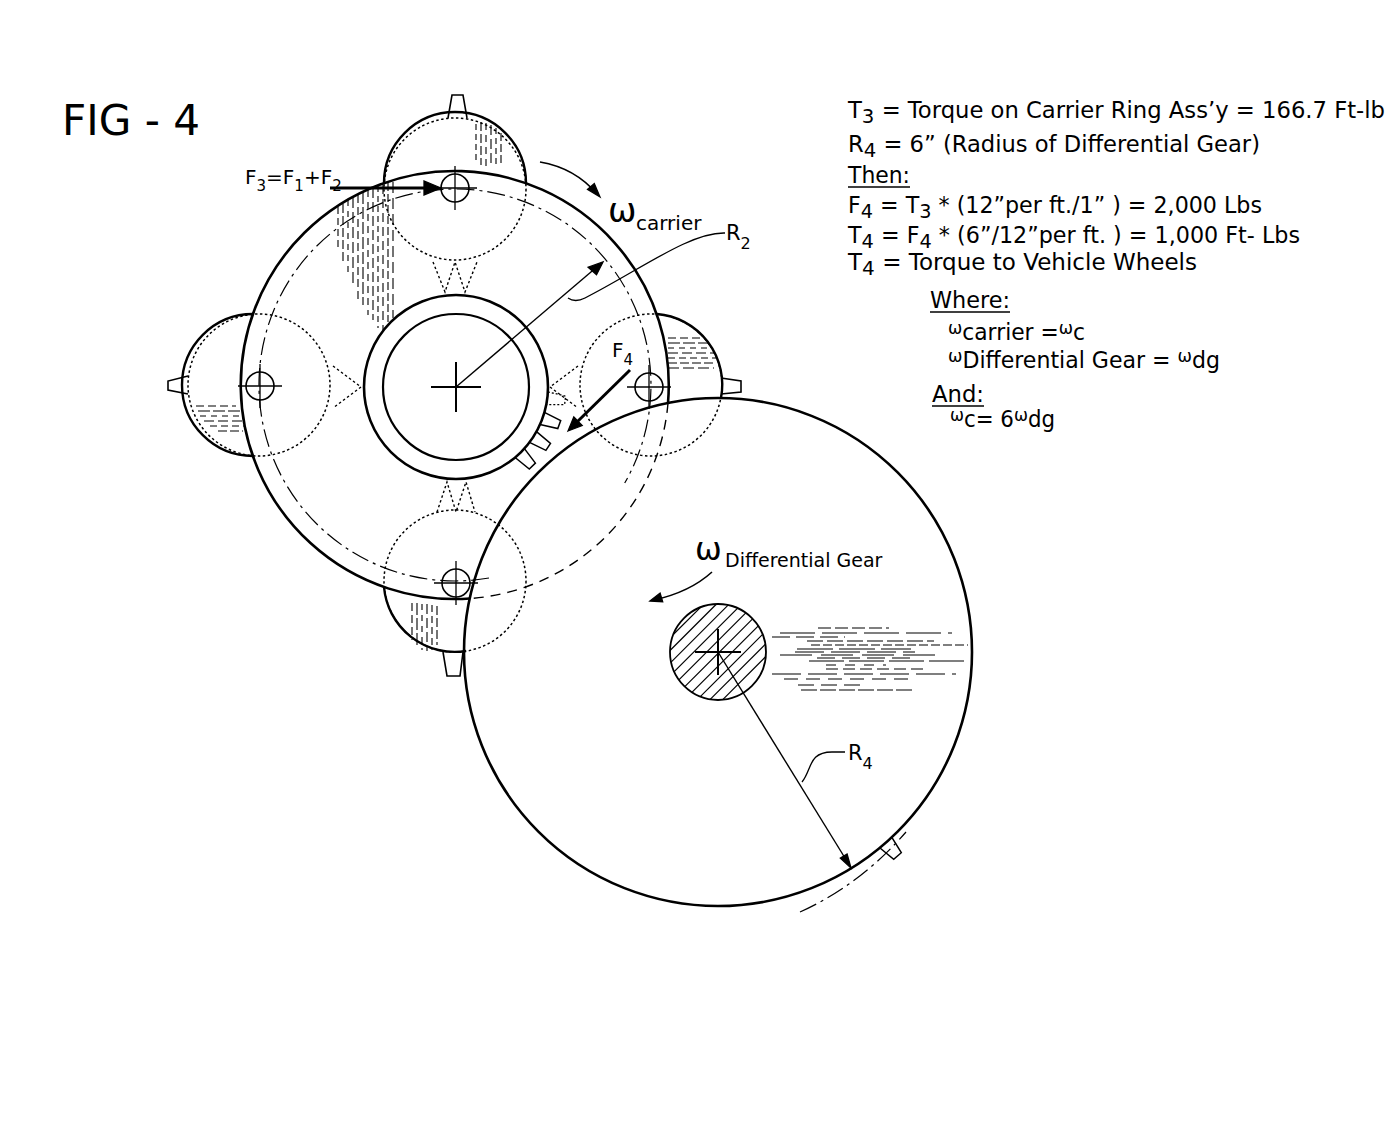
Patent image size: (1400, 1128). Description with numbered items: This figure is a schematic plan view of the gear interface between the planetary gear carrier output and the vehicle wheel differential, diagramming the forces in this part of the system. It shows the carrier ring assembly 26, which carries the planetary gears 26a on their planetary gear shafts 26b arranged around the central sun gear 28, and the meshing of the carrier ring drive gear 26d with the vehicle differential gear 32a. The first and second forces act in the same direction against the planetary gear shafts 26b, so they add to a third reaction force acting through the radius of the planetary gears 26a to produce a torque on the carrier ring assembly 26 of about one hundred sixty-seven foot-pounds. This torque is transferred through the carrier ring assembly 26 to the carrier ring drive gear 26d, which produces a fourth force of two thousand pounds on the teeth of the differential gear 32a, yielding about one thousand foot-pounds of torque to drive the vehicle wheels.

The carrier ring assembly 26 is at (657, 308).
The planetary gears 26a is at (507, 143).
The planetary gear shafts 26b is at (440, 187).
The carrier ring drive gear 26d is at (511, 308).
The sun gear 28 is at (429, 269).
The differential gear 32a is at (968, 618).